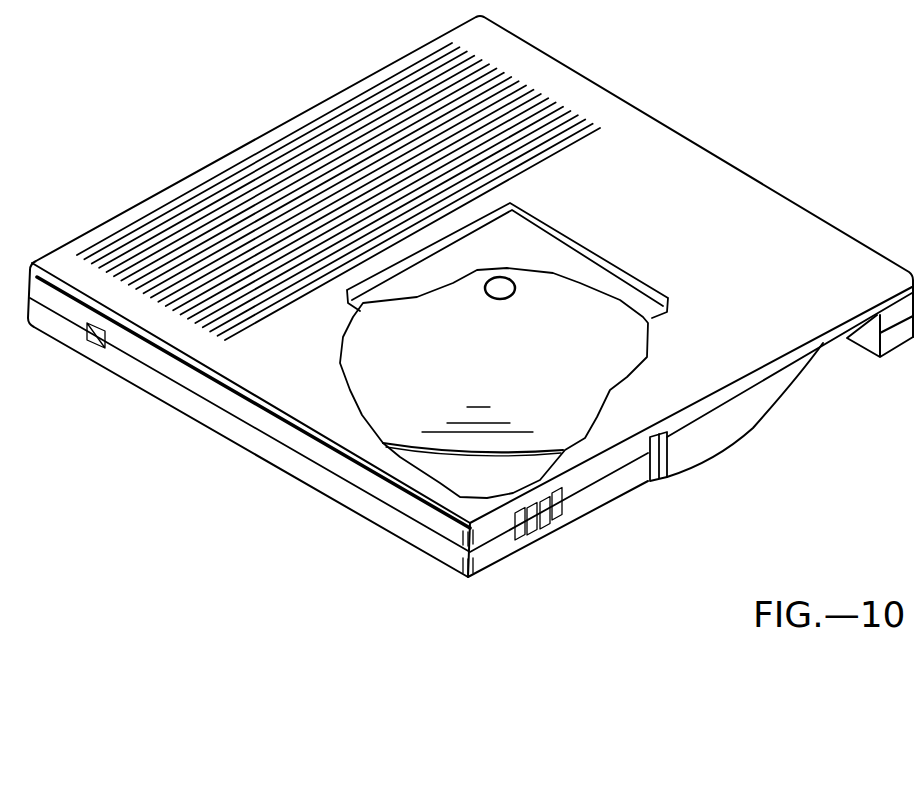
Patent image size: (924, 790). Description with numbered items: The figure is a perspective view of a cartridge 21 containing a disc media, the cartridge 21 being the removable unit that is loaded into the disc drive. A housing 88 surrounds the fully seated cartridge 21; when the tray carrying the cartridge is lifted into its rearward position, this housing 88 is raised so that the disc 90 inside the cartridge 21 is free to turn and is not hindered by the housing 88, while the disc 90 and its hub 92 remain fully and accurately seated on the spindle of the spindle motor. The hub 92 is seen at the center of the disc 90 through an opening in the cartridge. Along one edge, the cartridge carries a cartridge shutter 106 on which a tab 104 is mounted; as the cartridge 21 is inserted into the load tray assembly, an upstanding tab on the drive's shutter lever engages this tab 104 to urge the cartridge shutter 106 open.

The cartridge 21 is at (812, 112).
The housing 88 is at (647, 115).
The disc 90 is at (548, 447).
The hub 92 is at (516, 288).
The tab 104 is at (670, 477).
The cartridge shutter 106 is at (779, 407).